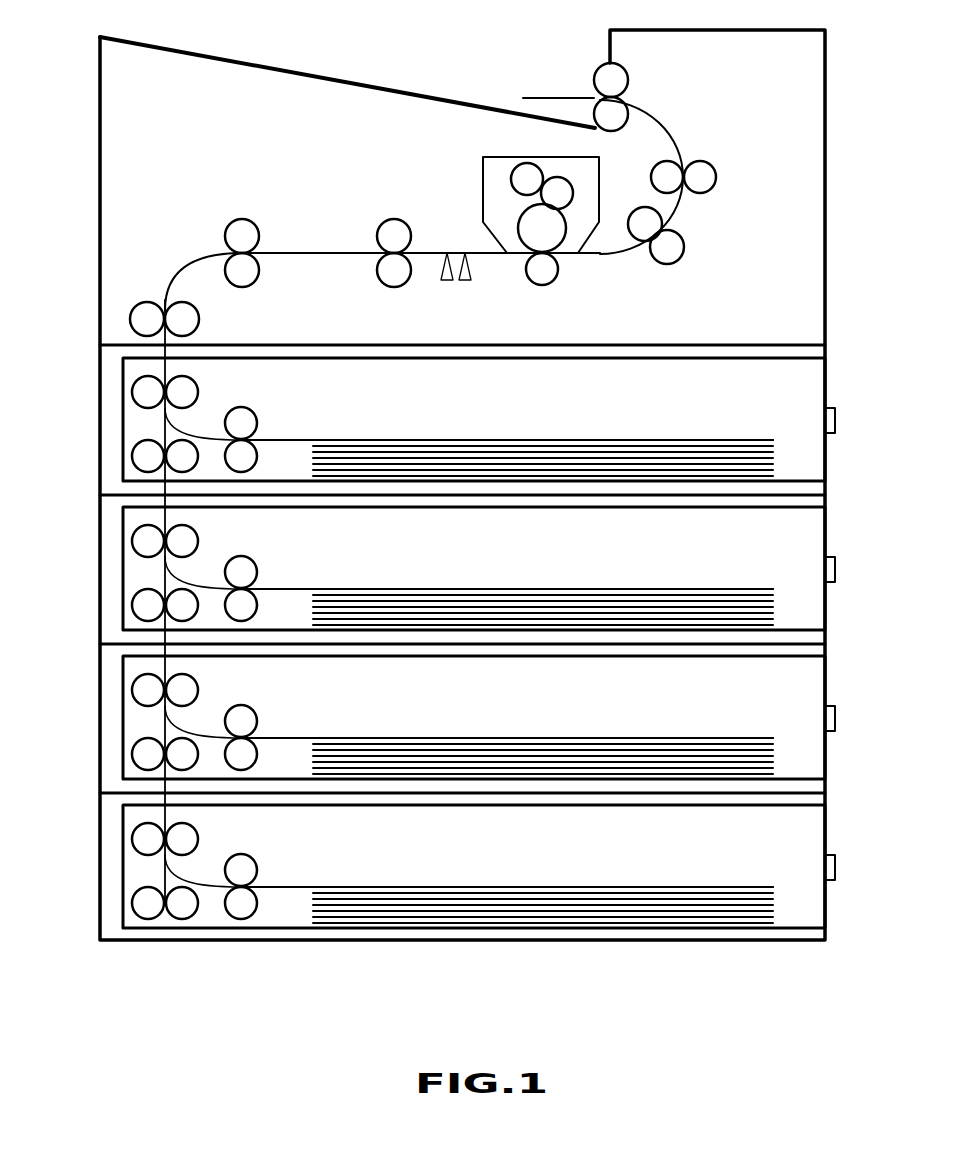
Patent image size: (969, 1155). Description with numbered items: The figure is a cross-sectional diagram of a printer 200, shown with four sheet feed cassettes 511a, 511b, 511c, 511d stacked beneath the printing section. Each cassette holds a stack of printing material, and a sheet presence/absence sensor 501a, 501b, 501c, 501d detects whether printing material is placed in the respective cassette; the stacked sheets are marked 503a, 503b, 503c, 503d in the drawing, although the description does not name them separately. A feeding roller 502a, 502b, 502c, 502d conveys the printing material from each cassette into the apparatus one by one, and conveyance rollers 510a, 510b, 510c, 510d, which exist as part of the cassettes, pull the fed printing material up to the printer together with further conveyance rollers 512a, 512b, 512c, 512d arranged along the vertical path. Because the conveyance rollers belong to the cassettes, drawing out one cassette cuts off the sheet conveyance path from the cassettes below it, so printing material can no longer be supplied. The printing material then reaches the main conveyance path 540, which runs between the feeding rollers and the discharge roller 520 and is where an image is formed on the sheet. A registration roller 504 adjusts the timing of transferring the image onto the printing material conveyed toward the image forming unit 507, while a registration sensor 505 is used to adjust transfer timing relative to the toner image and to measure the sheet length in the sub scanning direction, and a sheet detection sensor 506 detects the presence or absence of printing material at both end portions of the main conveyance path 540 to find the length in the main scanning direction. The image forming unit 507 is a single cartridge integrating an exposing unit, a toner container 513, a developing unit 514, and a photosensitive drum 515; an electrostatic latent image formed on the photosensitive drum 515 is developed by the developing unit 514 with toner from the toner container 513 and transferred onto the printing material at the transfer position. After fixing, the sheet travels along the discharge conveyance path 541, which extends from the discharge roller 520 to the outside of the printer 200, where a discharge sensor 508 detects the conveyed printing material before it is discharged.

The printer 200 is at (186, 52).
The sheet presence/absence sensor 501a is at (597, 440).
The sheet presence/absence sensor 501b is at (597, 589).
The sheet presence/absence sensor 501c is at (597, 738).
The sheet presence/absence sensor 501d is at (597, 887).
The feeding roller 502a is at (253, 410).
The feeding roller 502b is at (253, 559).
The feeding roller 502c is at (253, 708).
The feeding roller 502d is at (253, 857).
The sheet stacking plate 503a is at (712, 440).
The sheet stacking plate 503b is at (712, 589).
The sheet stacking plate 503c is at (712, 738).
The sheet stacking plate 503d is at (712, 887).
The registration roller 504 is at (245, 220).
The registration sensor 505 is at (447, 282).
The sheet detection sensor 506 is at (465, 282).
The image forming unit 507 is at (483, 158).
The discharge sensor 508 is at (662, 112).
The conveyance roller 510a is at (131, 392).
The conveyance roller 510b is at (131, 541).
The conveyance roller 510c is at (131, 690).
The conveyance roller 510d is at (131, 839).
The sheet feed cassette 511a is at (825, 380).
The sheet feed cassette 511b is at (825, 529).
The sheet feed cassette 511c is at (825, 678).
The sheet feed cassette 511d is at (825, 827).
The conveyance roller 512a is at (131, 456).
The conveyance roller 512b is at (131, 605).
The conveyance roller 512c is at (131, 754).
The conveyance roller 512d is at (131, 903).
The toner container 513 is at (527, 182).
The developing unit 514 is at (563, 186).
The photosensitive drum 515 is at (557, 233).
The discharge roller 520 is at (717, 178).
The main conveyance path 540 is at (292, 253).
The discharge conveyance path 541 is at (680, 138).